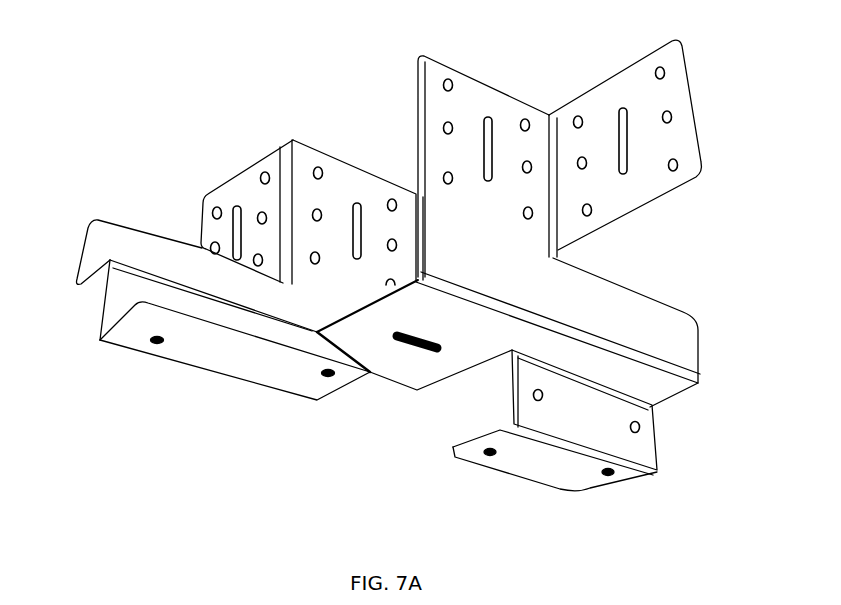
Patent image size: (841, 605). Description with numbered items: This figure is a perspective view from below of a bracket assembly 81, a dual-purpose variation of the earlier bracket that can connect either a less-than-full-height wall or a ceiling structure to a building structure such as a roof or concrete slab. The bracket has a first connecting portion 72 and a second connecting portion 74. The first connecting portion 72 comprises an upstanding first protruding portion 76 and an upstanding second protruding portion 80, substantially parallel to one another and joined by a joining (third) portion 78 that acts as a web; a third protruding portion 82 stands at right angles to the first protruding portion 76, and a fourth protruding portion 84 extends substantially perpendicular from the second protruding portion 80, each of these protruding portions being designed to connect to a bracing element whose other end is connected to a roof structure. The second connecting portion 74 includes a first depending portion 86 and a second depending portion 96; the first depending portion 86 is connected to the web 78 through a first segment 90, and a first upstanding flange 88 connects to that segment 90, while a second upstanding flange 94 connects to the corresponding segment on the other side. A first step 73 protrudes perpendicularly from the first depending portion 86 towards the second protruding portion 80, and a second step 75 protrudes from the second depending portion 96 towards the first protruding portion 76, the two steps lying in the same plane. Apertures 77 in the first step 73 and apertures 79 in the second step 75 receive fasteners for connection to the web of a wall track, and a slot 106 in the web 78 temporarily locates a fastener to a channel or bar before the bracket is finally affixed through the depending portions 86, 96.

The bracket assembly 81 is at (250, 67).
The first connecting portion 72 is at (375, 91).
The second connecting portion 74 is at (97, 357).
The first protruding portion 76 is at (343, 163).
The third protruding portion 82 is at (229, 185).
The second protruding portion 80 is at (490, 87).
The fourth protruding portion 84 is at (693, 193).
The first upstanding flange 88 is at (86, 241).
The first segment 90 is at (93, 285).
The first depending portion 86 is at (93, 329).
The first extension member or step 73 is at (232, 378).
The apertures 77 is at (155, 345).
The joining (third) portion or web 78 is at (418, 368).
The slot 106 is at (430, 342).
The second upstanding flange 94 is at (692, 347).
The second depending portion 96 is at (657, 430).
The second extension member or step 75 is at (523, 477).
The apertures 79 is at (485, 455).